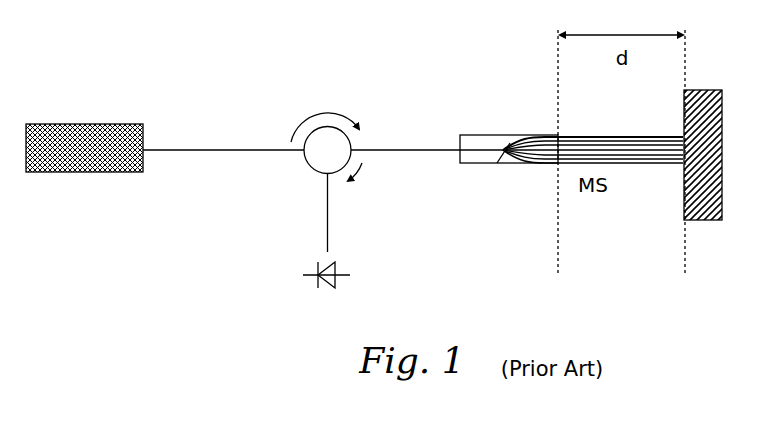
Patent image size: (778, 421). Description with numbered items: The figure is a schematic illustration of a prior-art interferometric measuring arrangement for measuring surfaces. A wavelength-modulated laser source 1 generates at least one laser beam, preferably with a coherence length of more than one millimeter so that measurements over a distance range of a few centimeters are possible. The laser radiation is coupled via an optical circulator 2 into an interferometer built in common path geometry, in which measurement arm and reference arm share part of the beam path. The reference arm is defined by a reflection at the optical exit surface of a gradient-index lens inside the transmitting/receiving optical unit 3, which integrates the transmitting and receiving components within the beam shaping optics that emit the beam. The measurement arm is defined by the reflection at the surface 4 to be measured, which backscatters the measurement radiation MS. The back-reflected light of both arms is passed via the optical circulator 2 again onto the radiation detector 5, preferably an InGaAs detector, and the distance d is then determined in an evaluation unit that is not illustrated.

The wavelength-modulated laser source 1 is at (56, 158).
The optical circulator 2 is at (317, 150).
The transmitting/receiving optical unit 3 is at (488, 140).
The surface 4 is at (695, 222).
The radiation detector 5 is at (337, 262).